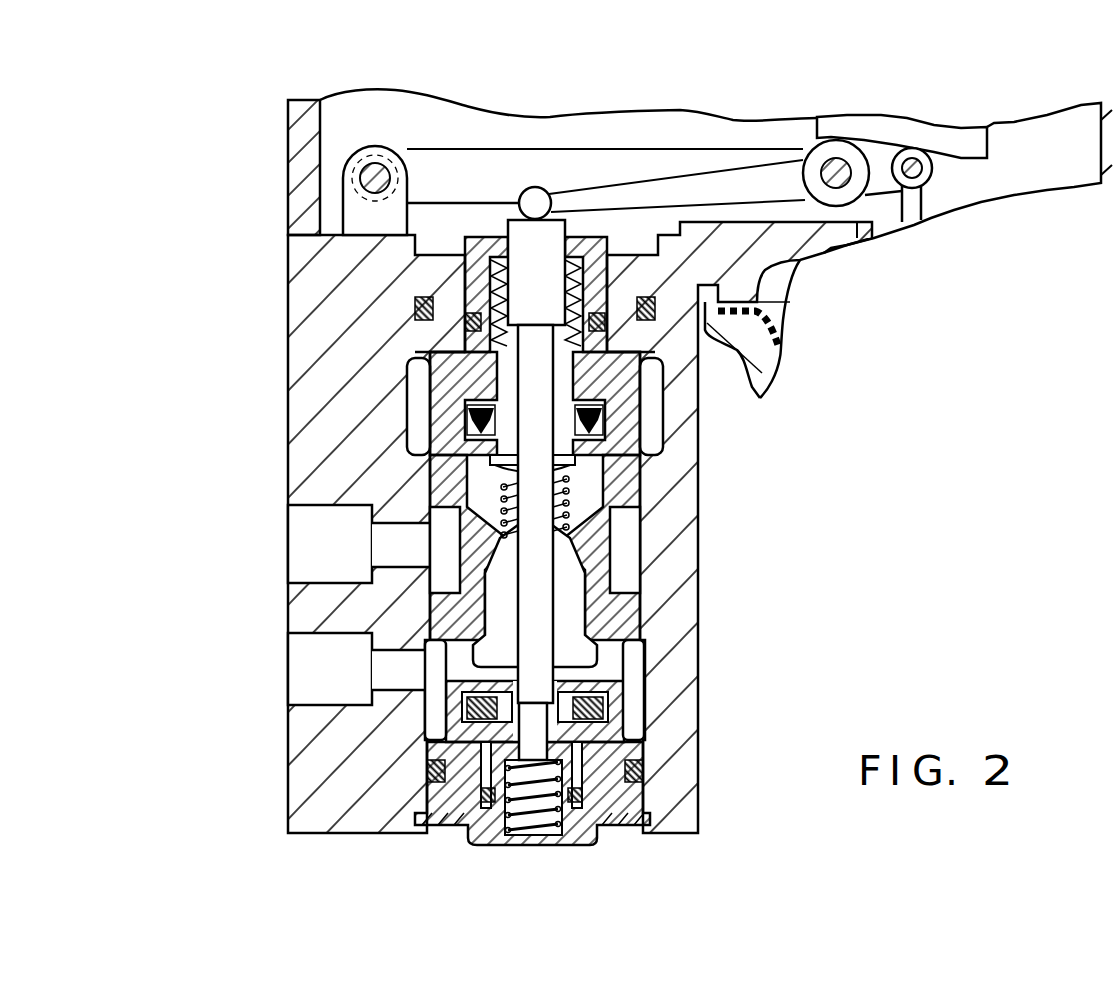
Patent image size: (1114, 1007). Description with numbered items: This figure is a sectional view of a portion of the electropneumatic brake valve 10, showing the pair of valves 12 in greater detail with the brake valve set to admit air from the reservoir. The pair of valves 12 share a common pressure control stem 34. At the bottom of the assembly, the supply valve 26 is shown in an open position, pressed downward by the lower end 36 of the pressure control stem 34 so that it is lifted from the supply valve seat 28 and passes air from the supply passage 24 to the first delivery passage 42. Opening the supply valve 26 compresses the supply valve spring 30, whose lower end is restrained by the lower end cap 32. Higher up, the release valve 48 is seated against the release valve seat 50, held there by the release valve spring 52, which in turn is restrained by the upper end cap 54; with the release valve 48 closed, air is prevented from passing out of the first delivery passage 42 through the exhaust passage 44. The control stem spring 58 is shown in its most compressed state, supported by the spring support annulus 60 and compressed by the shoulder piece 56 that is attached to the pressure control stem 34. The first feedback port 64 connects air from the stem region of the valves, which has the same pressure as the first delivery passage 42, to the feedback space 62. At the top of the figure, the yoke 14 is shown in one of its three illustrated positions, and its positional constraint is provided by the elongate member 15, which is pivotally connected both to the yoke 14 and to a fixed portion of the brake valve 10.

The electropneumatic brake valve 10 is at (413, 386).
The pair of valves 12 is at (650, 750).
The yoke 14 is at (715, 170).
The elongate member 15 is at (485, 162).
The supply passage 24 is at (305, 672).
The supply valve 26 is at (455, 715).
The supply valve seat 28 is at (607, 667).
The supply valve spring 30 is at (577, 835).
The lower end cap 32 is at (455, 805).
The pressure control stem 34 is at (540, 608).
The lower end of pressure control stem 36 is at (580, 700).
The first delivery passage 42 is at (310, 543).
The exhaust passage 44 is at (700, 393).
The release valve 48 is at (463, 422).
The release valve seat 50 is at (607, 440).
The release valve spring 52 is at (440, 352).
The upper end cap 54 is at (630, 243).
The shoulder piece 56 is at (500, 472).
The control stem spring 58 is at (580, 497).
The spring support annulus 60 is at (565, 555).
The feedback space 62 is at (413, 105).
The first feedback port 64 is at (487, 262).